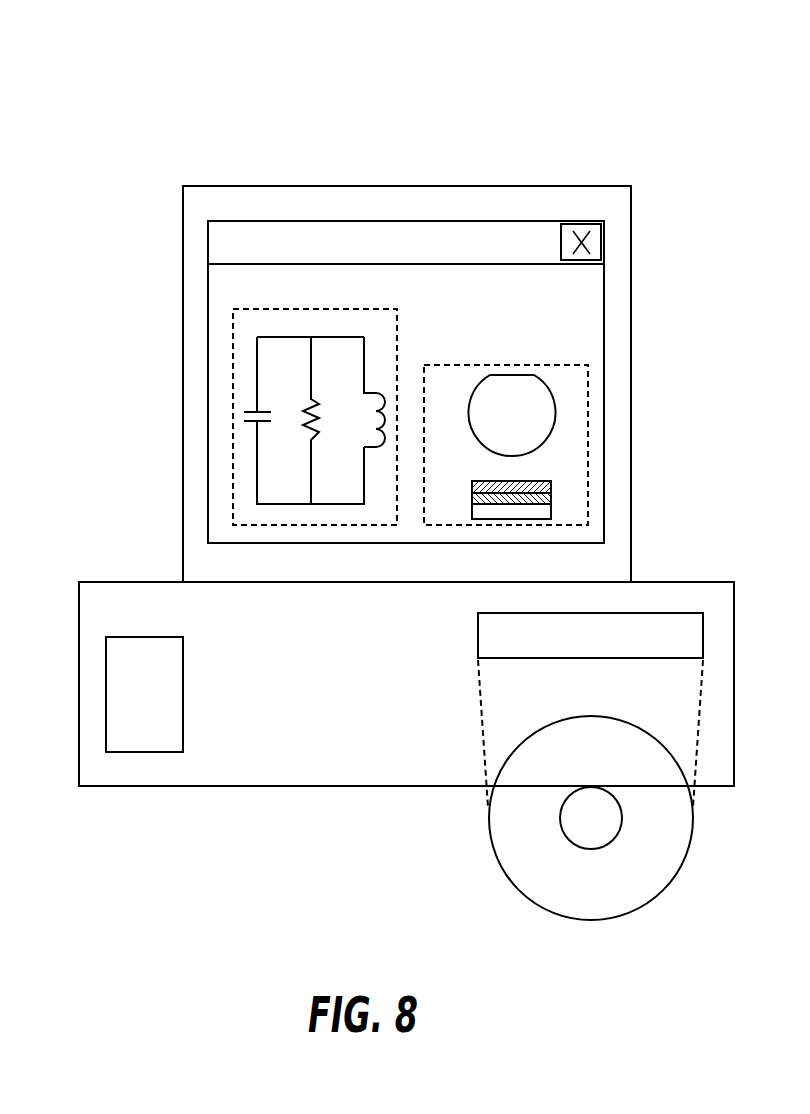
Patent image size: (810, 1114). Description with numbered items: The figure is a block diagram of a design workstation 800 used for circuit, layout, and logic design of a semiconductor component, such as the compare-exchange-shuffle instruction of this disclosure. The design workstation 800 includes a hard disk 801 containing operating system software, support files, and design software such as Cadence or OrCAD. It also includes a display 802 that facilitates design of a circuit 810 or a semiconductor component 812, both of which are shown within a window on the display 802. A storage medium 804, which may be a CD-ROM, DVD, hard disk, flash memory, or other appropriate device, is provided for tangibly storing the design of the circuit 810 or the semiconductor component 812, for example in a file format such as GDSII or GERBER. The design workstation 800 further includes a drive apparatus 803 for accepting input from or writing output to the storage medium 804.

The design workstation 800 is at (86, 67).
The display 802 is at (421, 186).
The circuit 810 is at (397, 342).
The semiconductor component 812 is at (517, 365).
The hard disk 801 is at (183, 695).
The drive apparatus 803 is at (670, 612).
The storage medium 804 is at (663, 891).